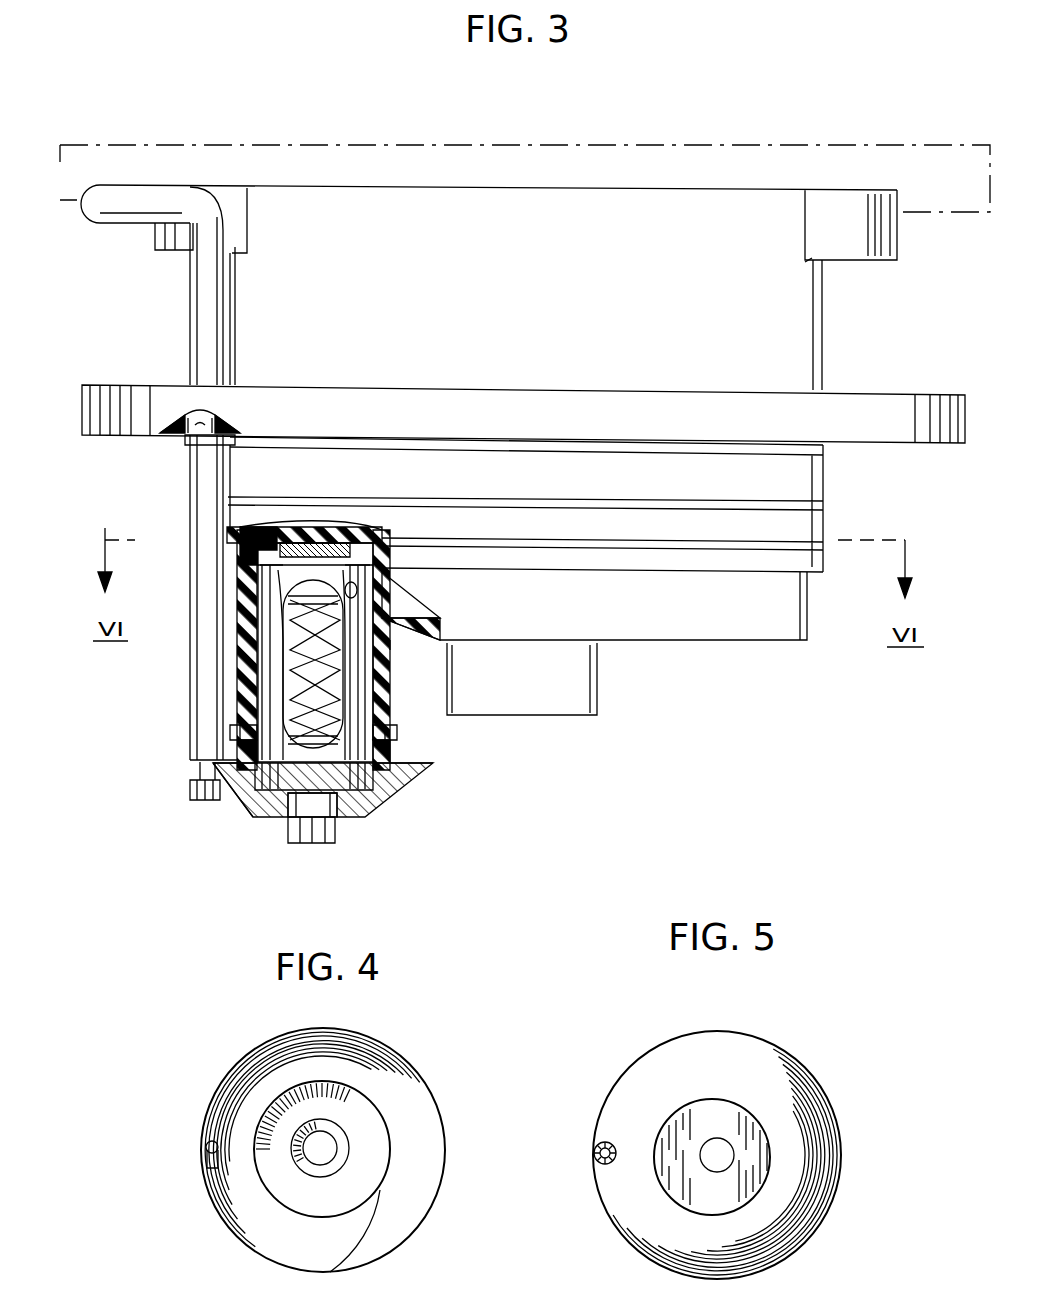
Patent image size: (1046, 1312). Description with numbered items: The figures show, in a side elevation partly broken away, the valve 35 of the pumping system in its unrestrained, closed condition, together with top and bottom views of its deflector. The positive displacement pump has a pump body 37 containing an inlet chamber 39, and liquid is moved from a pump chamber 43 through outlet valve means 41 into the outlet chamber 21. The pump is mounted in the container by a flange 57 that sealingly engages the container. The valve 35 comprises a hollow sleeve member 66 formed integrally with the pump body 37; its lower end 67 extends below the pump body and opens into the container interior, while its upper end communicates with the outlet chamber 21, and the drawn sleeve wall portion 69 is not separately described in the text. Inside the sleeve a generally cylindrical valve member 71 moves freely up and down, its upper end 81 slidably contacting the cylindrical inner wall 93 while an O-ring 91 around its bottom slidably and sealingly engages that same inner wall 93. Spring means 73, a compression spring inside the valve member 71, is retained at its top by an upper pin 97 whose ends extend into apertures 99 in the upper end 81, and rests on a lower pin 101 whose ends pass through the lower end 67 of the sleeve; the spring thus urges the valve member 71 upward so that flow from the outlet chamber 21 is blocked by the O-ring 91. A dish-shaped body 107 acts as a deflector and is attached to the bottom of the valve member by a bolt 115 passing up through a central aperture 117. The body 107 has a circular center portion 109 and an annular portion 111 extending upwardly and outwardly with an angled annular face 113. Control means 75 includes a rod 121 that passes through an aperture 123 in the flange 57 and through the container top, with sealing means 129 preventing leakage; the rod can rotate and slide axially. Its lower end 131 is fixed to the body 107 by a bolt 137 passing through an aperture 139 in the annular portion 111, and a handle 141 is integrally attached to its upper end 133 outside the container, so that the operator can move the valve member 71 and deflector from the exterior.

In FIG. 3, the outlet chamber 21 is at (357, 565).
In FIG. 3, the valve 35 is at (398, 683).
In FIG. 3, the pump body 37 is at (795, 332).
In FIG. 3, the inlet chamber 39 is at (410, 597).
In FIG. 3, the outlet valve means 41 is at (315, 545).
In FIG. 3, the pump chamber 43 is at (352, 528).
In FIG. 3, the flange 57 is at (852, 432).
In FIG. 3, the hollow sleeve member 66 is at (242, 662).
In FIG. 3, the lower end of hollow sleeve member 67 is at (422, 763).
In FIG. 3, the cylinder wall 69 is at (237, 585).
In FIG. 3, the valve member 71 is at (255, 713).
In FIG. 3, the spring means 73 is at (388, 656).
In FIG. 3, the control means 75 is at (178, 318).
In FIG. 3, the upper end of valve member 81 is at (268, 600).
In FIG. 3, the O-ring 91 is at (338, 764).
In FIG. 3, the inner wall 93 is at (237, 640).
In FIG. 3, the upper pin 97 is at (323, 585).
In FIG. 3, the apertures 99 is at (392, 578).
In FIG. 3, the lower pin 101 is at (268, 793).
In FIG. 3, the dish-shaped body 107 is at (362, 817).
In FIG. 3, the circular center portion 109 is at (285, 812).
In FIG. 4, the circular center portion 109 is at (345, 1115).
In FIG. 5, the circular center portion 109 is at (700, 1190).
In FIG. 4, the annular portion 111 is at (420, 1106).
In FIG. 5, the annular portion 111 is at (665, 1058).
In FIG. 4, the annular face 113 is at (370, 1251).
In FIG. 3, the bolt 115 is at (314, 835).
In FIG. 4, the central aperture 117 is at (340, 1148).
In FIG. 5, the central aperture 117 is at (732, 1147).
In FIG. 3, the rod 121 is at (210, 532).
In FIG. 3, the aperture in flange 123 is at (203, 412).
In FIG. 3, the sealing means 129 is at (200, 442).
In FIG. 3, the lower end of rod 131 is at (203, 748).
In FIG. 3, the upper end of rod 133 is at (498, 222).
In FIG. 3, the bolt 137 is at (205, 803).
In FIG. 4, the aperture in annular portion 139 is at (210, 1168).
In FIG. 5, the aperture in annular portion 139 is at (618, 1142).
In FIG. 3, the handle 141 is at (153, 198).